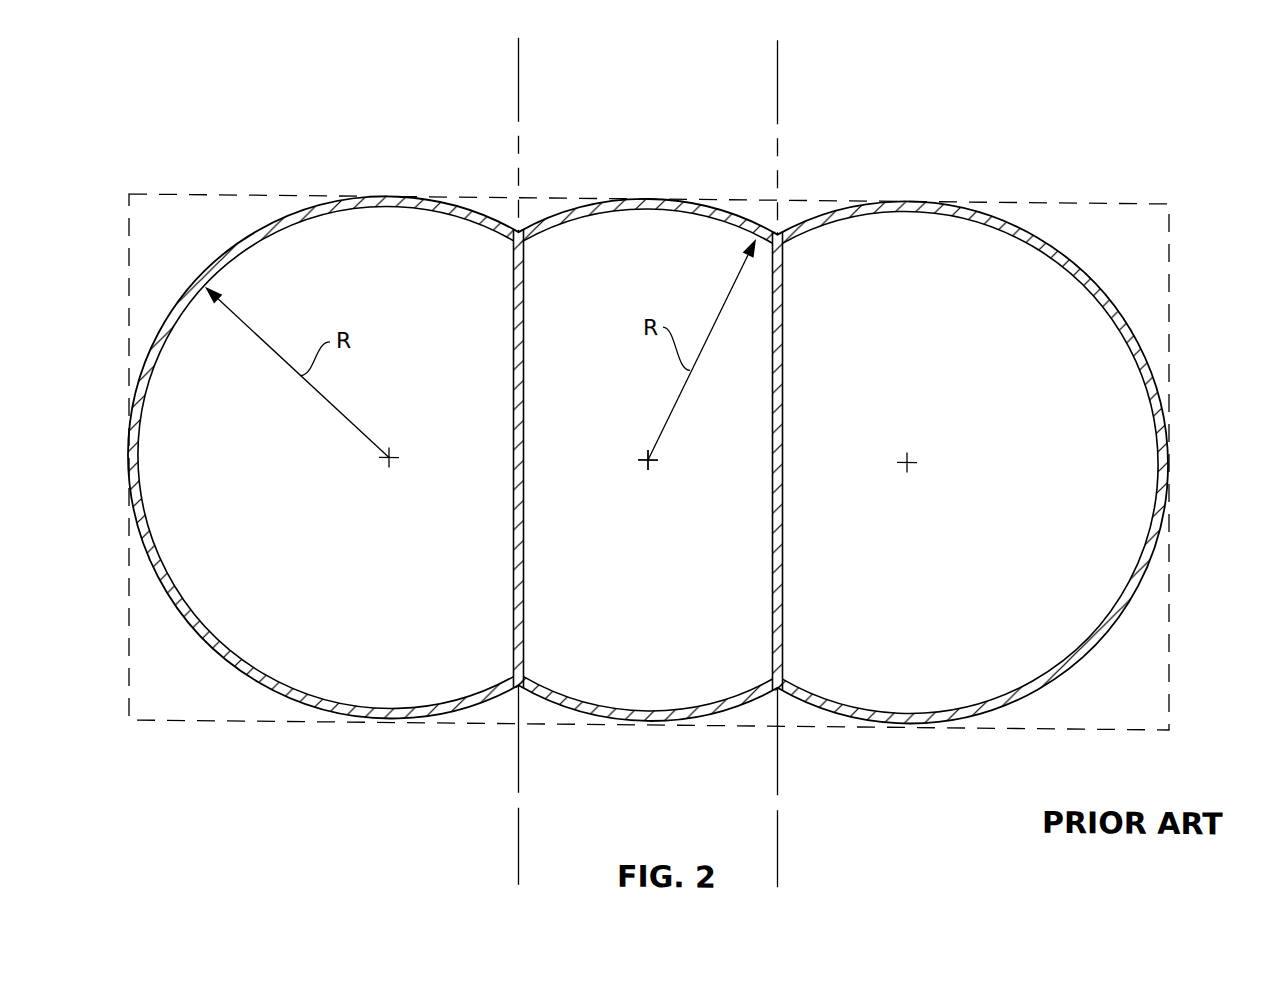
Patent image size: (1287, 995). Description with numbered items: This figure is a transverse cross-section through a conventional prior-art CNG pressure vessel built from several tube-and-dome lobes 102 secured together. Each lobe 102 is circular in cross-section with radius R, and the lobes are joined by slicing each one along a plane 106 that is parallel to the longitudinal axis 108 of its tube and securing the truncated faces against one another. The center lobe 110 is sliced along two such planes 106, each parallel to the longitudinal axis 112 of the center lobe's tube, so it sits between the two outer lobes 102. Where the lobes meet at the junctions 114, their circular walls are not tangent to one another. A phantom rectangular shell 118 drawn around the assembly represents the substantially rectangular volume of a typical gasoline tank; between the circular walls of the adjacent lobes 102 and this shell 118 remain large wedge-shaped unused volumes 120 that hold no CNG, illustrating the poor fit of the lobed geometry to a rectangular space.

The lobe 102 is at (366, 710).
The plane 106 is at (518, 72).
The longitudinal axis 108 is at (393, 463).
The center lobe 110 is at (706, 710).
The longitudinal axis of the center lobe's tube 112 is at (650, 465).
The junction 114 is at (523, 236).
The phantom rectangular shell 118 is at (1169, 194).
The unused volume 120 is at (552, 192).